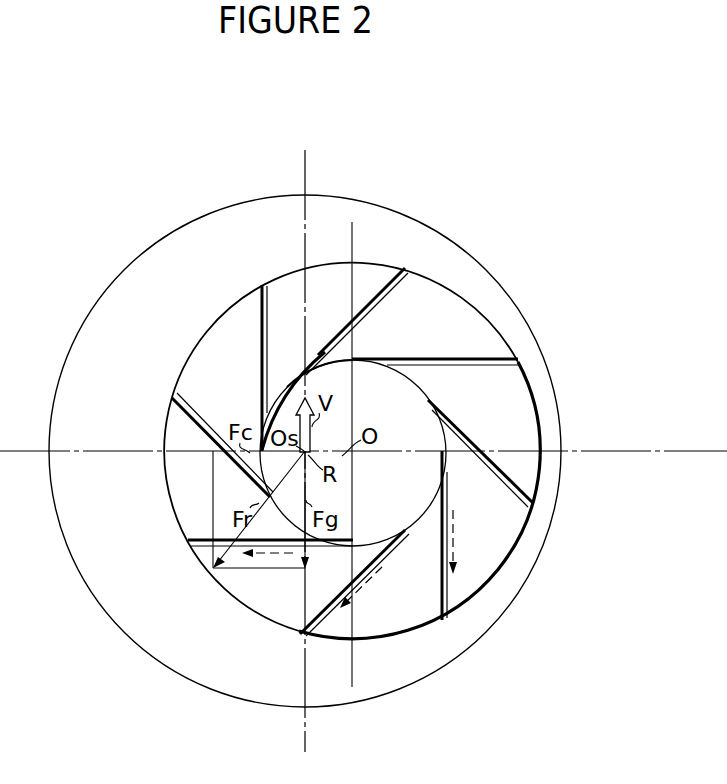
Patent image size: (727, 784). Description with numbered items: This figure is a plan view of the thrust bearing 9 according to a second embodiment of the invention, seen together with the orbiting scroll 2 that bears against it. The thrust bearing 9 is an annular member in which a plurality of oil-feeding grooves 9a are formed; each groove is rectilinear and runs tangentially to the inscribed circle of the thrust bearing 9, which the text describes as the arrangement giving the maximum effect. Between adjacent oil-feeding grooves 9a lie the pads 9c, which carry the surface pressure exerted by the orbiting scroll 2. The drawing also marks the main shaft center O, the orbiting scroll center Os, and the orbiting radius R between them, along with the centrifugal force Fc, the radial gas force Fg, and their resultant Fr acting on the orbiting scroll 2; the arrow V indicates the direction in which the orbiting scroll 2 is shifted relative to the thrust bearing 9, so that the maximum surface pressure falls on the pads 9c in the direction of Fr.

The orbiting scroll 2 is at (492, 275).
The thrust bearing 9 is at (515, 558).
The oil-feeding grooves 9a is at (440, 597).
The pads 9c is at (262, 607).